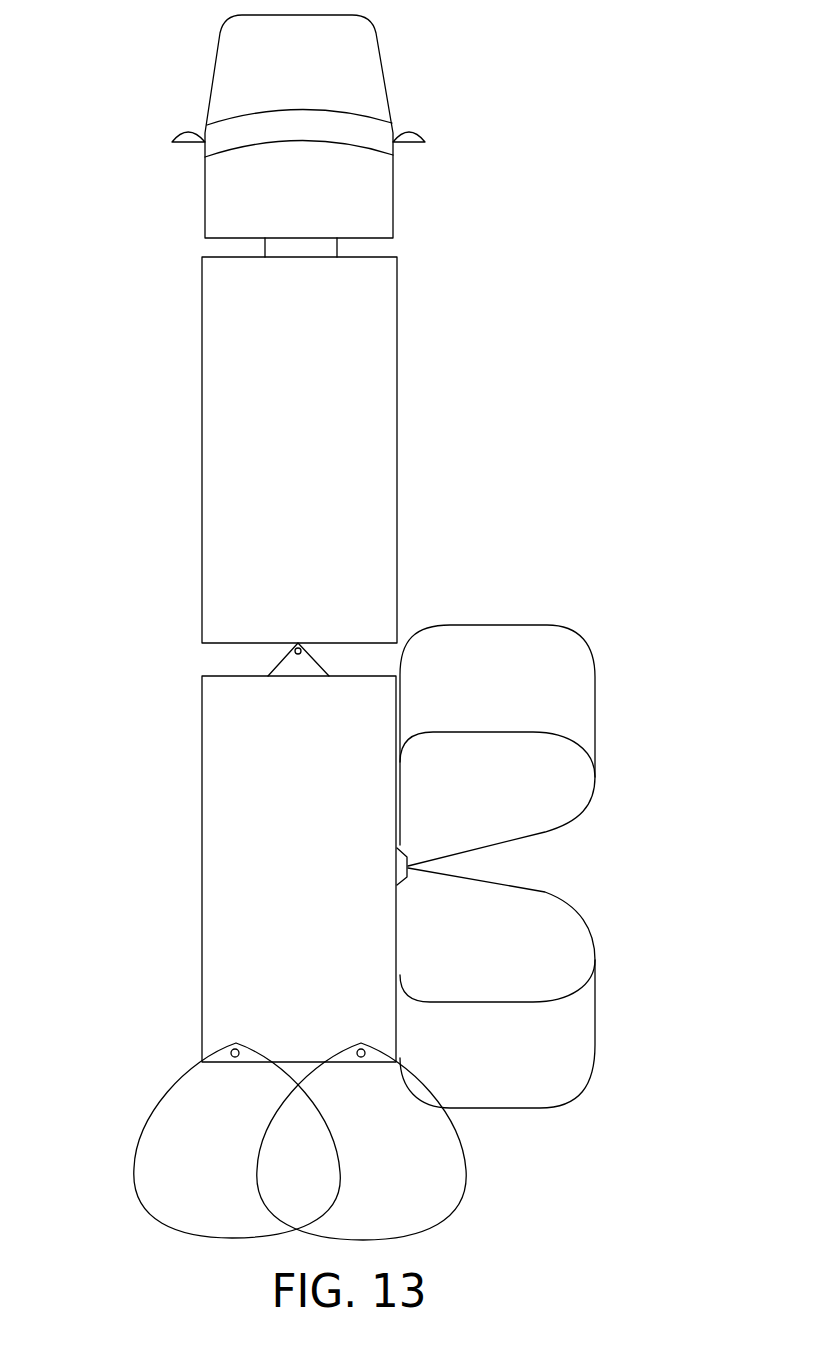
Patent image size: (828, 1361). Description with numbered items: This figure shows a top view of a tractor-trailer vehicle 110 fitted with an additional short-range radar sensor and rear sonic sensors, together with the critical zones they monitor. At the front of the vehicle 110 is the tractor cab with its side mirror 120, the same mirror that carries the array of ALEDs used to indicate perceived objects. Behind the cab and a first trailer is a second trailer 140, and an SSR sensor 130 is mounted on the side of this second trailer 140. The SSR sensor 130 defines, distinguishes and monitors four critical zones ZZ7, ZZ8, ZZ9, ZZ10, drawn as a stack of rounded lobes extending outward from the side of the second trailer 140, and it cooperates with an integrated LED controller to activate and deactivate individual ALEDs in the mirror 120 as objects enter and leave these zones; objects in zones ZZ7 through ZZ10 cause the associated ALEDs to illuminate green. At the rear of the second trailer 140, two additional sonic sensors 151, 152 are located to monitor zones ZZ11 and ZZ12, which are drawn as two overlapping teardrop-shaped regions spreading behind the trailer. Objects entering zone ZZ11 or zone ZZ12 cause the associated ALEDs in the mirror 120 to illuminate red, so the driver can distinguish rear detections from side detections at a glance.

The vehicle 110 is at (478, 281).
The side mirror 120 is at (410, 128).
The SSR sensor 130 is at (400, 872).
The second trailer 140 is at (195, 914).
The sonic sensor 151 is at (360, 1048).
The sonic sensor 152 is at (236, 1048).
The critical zone ZZ7 is at (583, 643).
The critical zone ZZ8 is at (572, 808).
The critical zone ZZ9 is at (565, 918).
The critical zone ZZ10 is at (578, 1017).
The critical zone ZZ11 is at (452, 1160).
The critical zone ZZ12 is at (132, 1163).